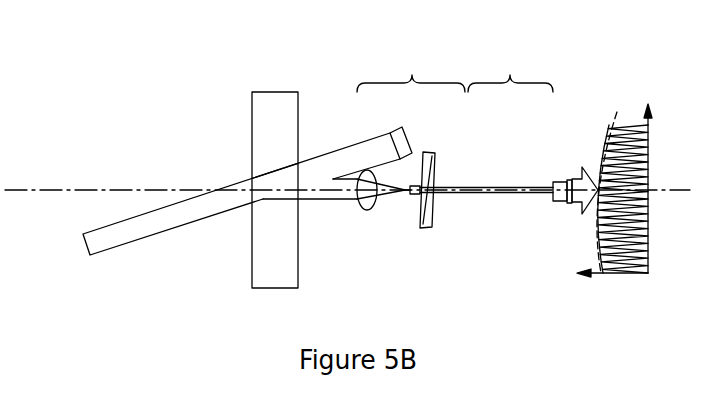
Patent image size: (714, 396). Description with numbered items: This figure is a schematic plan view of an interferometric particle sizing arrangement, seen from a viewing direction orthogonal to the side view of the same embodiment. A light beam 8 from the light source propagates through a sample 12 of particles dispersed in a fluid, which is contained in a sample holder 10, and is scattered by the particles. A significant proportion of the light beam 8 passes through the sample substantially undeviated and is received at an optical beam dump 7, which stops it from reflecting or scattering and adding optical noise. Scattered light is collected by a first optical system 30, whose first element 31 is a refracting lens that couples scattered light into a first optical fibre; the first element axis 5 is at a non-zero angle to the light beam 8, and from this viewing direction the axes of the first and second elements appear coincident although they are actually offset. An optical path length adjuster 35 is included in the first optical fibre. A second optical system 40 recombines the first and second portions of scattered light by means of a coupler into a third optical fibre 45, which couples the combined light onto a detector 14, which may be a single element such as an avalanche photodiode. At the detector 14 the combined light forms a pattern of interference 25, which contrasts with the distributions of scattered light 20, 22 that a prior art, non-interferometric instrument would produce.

The first element axis 5 is at (33, 190).
The optical beam dump 7 is at (397, 130).
The light beam 8 is at (142, 228).
The sample holder 10 is at (250, 260).
The sample 12 is at (265, 135).
The detector 14 is at (550, 202).
The distribution of scattered light 20 is at (603, 118).
The distribution of scattered light 22 is at (618, 110).
The pattern of interference 25 is at (623, 270).
The first optical system 30 is at (412, 75).
The first element 31 is at (365, 209).
The optical path length adjuster 35 is at (418, 210).
The second optical system 40 is at (510, 75).
The third optical fibre 45 is at (525, 193).